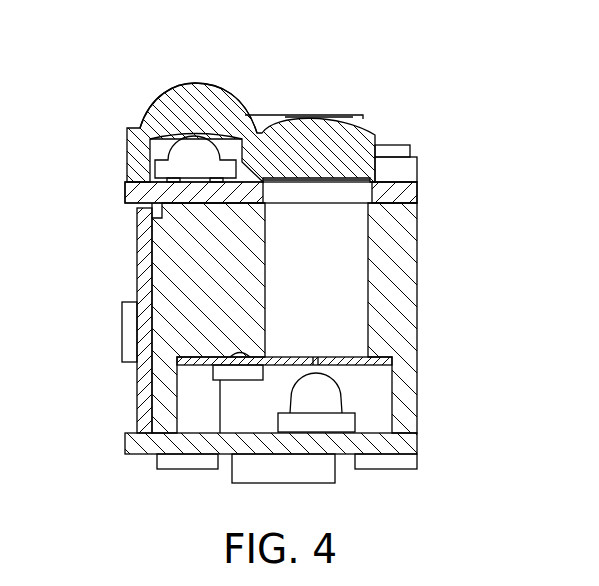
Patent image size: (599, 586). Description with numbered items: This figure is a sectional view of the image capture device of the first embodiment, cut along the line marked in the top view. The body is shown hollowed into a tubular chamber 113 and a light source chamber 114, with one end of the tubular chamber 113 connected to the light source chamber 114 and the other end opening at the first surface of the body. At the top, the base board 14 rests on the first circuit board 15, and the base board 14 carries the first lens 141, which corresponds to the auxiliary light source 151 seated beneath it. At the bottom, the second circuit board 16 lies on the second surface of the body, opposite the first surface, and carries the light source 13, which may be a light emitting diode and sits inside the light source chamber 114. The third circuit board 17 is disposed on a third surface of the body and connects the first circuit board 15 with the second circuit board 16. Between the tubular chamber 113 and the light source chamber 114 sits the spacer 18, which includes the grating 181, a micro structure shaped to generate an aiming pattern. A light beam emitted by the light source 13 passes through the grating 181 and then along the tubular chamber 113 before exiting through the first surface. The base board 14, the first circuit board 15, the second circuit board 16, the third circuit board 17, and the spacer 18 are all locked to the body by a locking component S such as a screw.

The light source 13 is at (322, 397).
The base board 14 is at (128, 127).
The first lens 141 is at (192, 85).
The first circuit board 15 is at (135, 190).
The auxiliary light source 151 is at (188, 158).
The second circuit board 16 is at (135, 444).
The third circuit board 17 is at (137, 257).
The spacer 18 is at (347, 357).
The grating 181 is at (318, 357).
The tubular chamber 113 is at (305, 237).
The light source chamber 114 is at (378, 393).
The locking component S is at (245, 370).